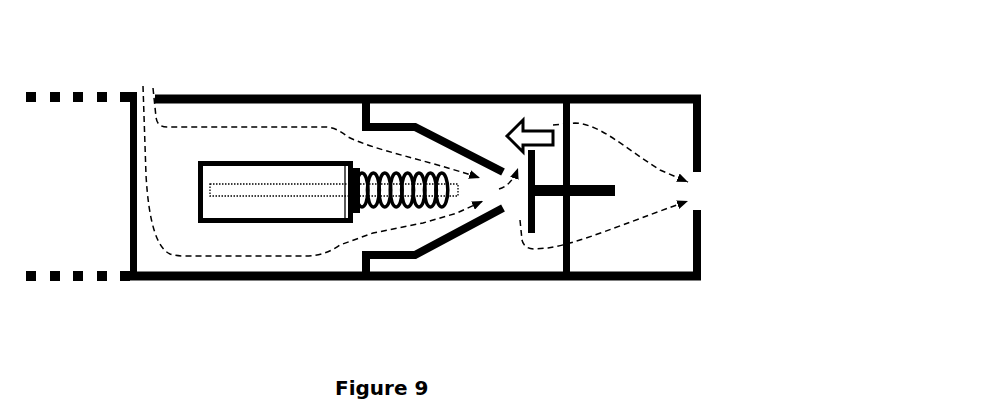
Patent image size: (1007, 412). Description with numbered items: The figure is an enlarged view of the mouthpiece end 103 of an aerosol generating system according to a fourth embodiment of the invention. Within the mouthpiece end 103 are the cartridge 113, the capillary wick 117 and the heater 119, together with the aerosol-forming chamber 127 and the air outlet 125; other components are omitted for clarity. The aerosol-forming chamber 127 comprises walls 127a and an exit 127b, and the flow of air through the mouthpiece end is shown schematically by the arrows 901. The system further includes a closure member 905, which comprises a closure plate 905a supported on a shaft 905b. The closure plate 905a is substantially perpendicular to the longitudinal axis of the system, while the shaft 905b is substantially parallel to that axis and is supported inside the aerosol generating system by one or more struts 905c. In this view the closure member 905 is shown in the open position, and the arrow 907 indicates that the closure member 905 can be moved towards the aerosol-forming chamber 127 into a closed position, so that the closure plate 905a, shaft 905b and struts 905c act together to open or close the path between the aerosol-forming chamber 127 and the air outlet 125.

The mouthpiece end 103 is at (178, 84).
The arrows 901 is at (223, 122).
The cartridge 113 is at (258, 222).
The capillary wick 117 is at (281, 183).
The heater 119 is at (407, 206).
The aerosol-forming chamber 127 is at (472, 187).
The walls 127a is at (470, 186).
The exit 127b is at (506, 193).
The arrow 907 is at (540, 127).
The closure member 905 is at (642, 193).
The closure plate 905a is at (533, 233).
The shaft 905b is at (615, 193).
The struts 905c is at (568, 228).
The air outlet 125 is at (708, 198).